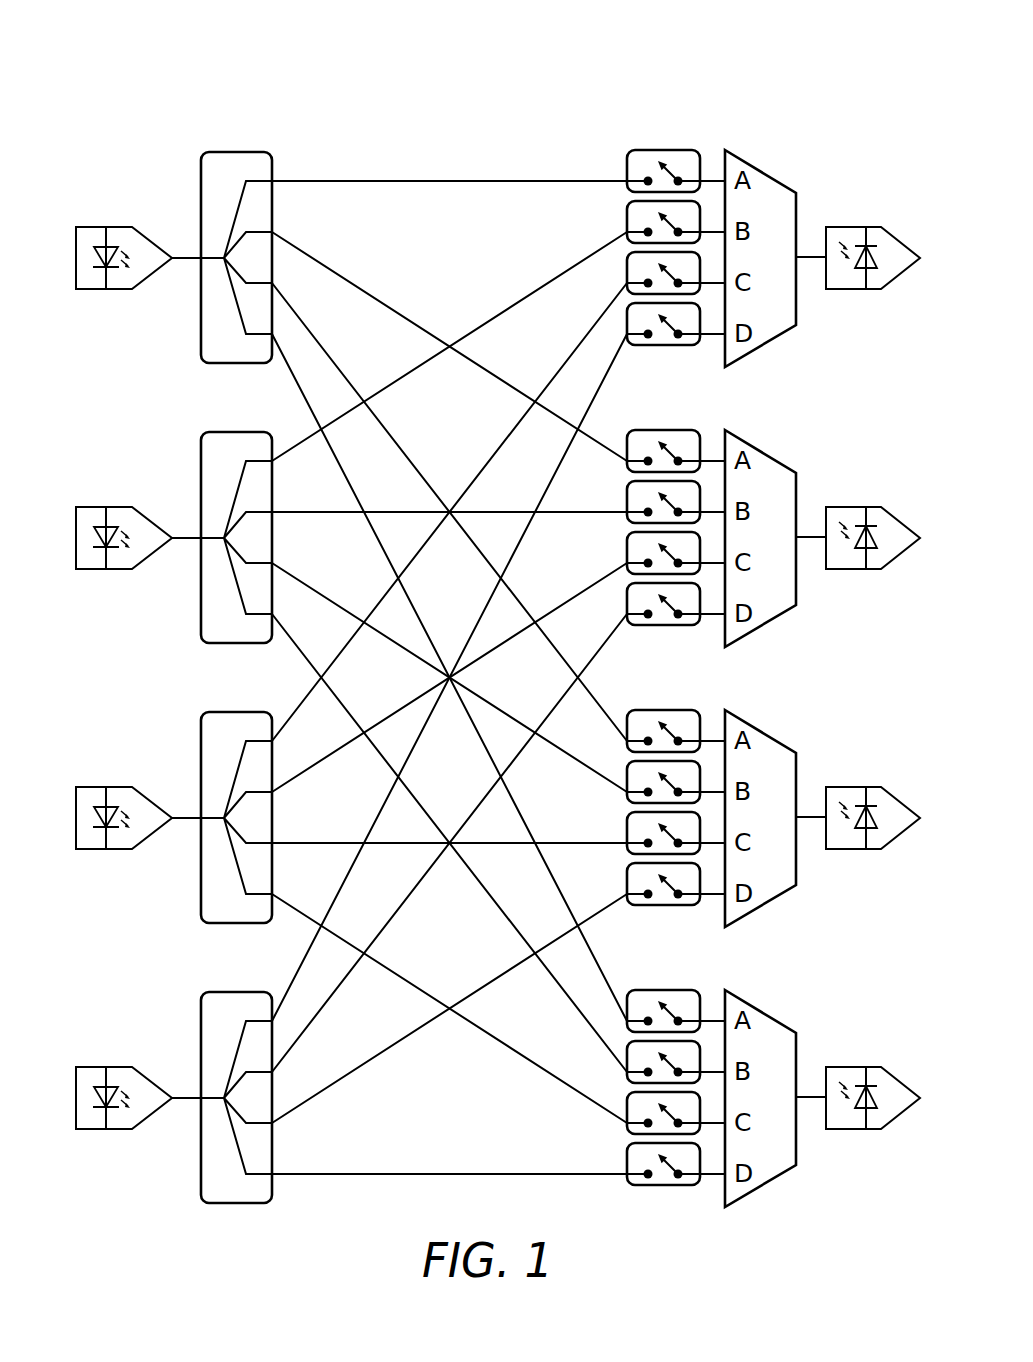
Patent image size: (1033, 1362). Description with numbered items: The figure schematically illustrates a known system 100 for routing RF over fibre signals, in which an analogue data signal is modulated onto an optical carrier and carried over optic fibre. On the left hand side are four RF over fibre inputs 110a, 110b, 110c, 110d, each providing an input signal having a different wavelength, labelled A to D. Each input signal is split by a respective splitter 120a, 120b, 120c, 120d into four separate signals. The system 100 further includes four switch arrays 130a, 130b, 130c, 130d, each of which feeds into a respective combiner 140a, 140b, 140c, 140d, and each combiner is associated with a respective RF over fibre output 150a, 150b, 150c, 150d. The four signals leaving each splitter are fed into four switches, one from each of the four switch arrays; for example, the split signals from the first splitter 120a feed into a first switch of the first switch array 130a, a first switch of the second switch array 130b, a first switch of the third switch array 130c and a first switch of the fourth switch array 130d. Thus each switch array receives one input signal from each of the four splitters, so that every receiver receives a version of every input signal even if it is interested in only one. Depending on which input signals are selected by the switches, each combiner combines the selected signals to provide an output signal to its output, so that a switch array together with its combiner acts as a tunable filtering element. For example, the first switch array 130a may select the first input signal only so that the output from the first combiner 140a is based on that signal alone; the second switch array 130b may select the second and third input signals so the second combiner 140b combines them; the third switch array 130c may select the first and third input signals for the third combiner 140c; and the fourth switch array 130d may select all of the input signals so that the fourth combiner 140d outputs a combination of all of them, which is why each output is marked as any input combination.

The system for routing RF over fibre signals 100 is at (234, 59).
The first RF over fibre input 110a is at (89, 227).
The second RF over fibre input 110b is at (119, 538).
The third RF over fibre input 110c is at (119, 818).
The fourth RF over fibre input 110d is at (119, 1098).
The first splitter 120a is at (201, 166).
The second splitter 120b is at (192, 527).
The third splitter 120c is at (192, 807).
The fourth splitter 120d is at (192, 1087).
The first switch array 130a is at (662, 150).
The second switch array 130b is at (676, 498).
The third switch array 130c is at (676, 778).
The fourth switch array 130d is at (676, 1058).
The first combiner 140a is at (769, 176).
The second combiner 140b is at (778, 525).
The third combiner 140c is at (778, 805).
The fourth combiner 140d is at (778, 1085).
The first RF over fibre output 150a is at (846, 227).
The second RF over fibre output 150b is at (873, 551).
The third RF over fibre output 150c is at (873, 831).
The fourth RF over fibre output 150d is at (873, 1111).